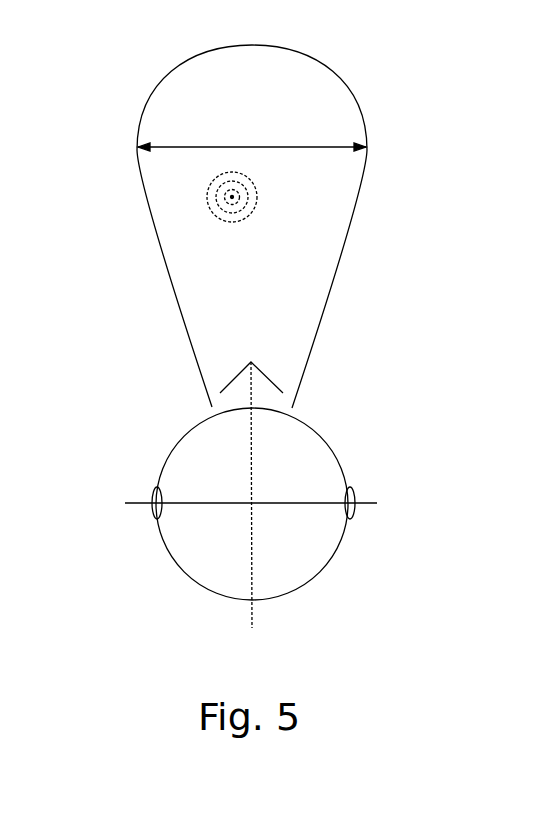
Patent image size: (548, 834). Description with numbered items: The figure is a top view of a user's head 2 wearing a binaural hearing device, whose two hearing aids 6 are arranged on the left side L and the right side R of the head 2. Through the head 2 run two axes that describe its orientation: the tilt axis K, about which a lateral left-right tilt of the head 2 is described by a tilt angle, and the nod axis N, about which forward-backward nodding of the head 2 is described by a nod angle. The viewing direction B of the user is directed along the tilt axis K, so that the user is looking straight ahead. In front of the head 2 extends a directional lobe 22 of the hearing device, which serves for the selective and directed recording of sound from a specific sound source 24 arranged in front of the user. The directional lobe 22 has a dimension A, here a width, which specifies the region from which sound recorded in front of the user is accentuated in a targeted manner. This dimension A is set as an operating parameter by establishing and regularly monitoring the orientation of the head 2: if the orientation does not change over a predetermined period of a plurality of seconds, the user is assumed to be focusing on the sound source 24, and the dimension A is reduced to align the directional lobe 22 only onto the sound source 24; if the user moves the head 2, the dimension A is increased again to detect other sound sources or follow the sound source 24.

The head 2 is at (190, 577).
The hearing aids 6 is at (352, 490).
The directional lobe 22 is at (187, 330).
The sound source 24 is at (248, 207).
The dimension A is at (243, 147).
The viewing direction B is at (268, 375).
The tilt axis K is at (255, 612).
The nod axis N is at (303, 510).
The left side L is at (65, 505).
The right side R is at (418, 507).